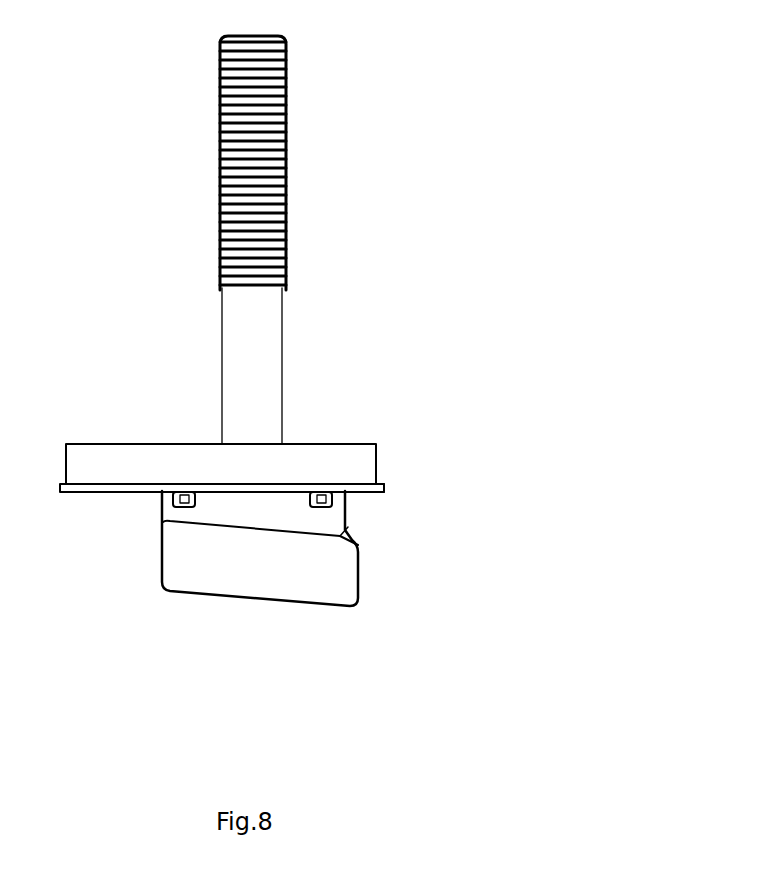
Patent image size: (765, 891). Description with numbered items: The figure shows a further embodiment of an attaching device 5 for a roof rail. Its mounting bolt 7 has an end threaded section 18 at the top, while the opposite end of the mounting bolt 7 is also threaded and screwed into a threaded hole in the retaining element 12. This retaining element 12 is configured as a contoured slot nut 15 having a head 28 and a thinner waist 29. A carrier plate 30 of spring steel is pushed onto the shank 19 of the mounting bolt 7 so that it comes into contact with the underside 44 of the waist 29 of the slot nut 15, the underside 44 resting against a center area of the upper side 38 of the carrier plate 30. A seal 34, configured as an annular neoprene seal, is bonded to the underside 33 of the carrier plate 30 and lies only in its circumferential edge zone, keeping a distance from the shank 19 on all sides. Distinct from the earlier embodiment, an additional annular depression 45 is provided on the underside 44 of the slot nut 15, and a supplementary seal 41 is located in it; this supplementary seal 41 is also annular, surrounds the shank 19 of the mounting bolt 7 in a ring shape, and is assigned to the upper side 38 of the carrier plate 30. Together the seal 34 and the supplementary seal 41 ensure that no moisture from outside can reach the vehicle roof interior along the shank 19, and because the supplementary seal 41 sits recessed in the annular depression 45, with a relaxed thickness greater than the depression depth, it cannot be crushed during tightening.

The attaching device 5 is at (413, 283).
The mounting bolt 7 is at (262, 362).
The retaining element 12 is at (222, 570).
The slot nut 15 is at (388, 545).
The threaded section 18 is at (270, 152).
The shank 19 is at (303, 252).
The head 28 is at (340, 571).
The waist 29 is at (360, 511).
The carrier plate 30 is at (388, 489).
The underside of the carrier plate 33 is at (138, 482).
The seal 34 is at (162, 457).
The upper side of the carrier plate 38 is at (118, 493).
The supplementary seal 41 is at (328, 493).
The underside of the slot nut 44 is at (163, 580).
The annular depression 45 is at (312, 507).